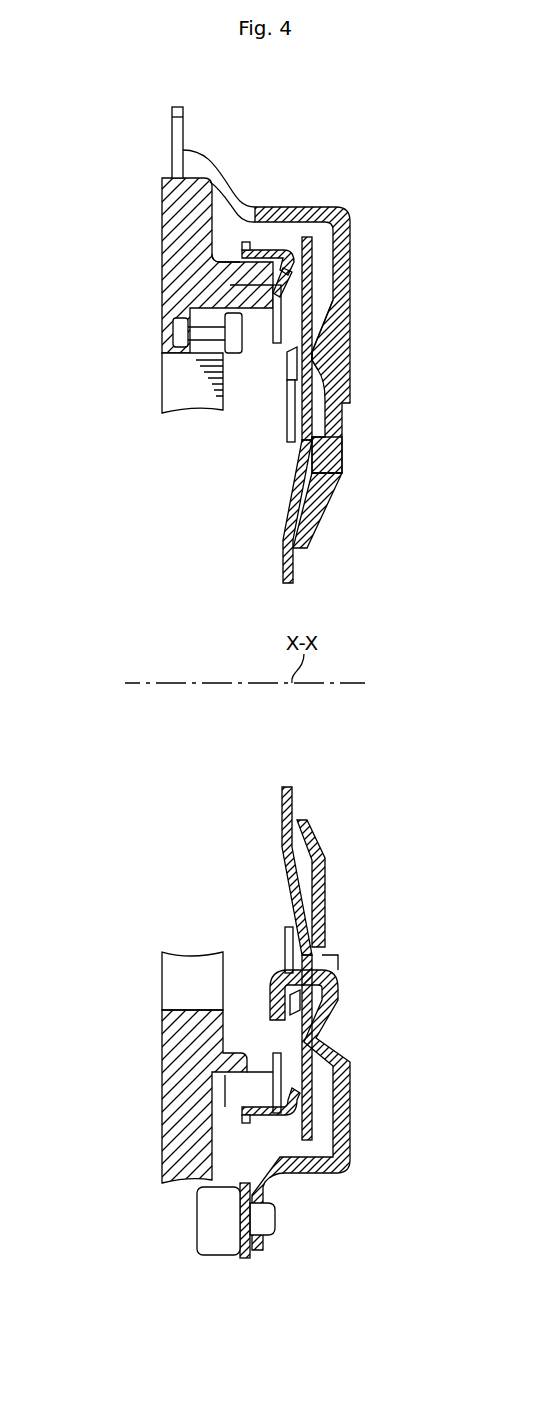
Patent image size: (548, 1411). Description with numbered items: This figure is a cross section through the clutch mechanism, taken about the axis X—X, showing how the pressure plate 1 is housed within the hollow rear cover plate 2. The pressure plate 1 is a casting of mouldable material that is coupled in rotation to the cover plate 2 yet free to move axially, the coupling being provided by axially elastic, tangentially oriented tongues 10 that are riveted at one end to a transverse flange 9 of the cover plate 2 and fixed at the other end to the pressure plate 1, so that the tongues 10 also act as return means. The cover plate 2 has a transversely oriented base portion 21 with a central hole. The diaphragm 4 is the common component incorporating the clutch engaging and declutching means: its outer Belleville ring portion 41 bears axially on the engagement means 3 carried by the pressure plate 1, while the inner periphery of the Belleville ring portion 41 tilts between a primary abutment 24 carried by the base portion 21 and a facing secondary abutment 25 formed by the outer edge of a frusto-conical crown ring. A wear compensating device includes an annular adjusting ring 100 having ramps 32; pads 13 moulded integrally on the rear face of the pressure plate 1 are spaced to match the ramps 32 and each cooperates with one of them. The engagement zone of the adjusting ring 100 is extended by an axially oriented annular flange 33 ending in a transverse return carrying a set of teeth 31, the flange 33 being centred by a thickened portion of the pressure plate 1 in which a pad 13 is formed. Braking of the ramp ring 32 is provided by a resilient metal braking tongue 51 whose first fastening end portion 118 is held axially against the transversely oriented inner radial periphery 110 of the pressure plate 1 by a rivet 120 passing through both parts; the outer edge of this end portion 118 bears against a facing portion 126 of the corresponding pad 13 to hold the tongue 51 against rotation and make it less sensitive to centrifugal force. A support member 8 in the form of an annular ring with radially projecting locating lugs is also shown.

The pressure plate 1 is at (150, 215).
The hollow rear cover plate 2 is at (350, 240).
The engagement means 3 is at (298, 1087).
The diaphragm 4 is at (353, 338).
The support member 8 is at (325, 507).
The transverse flange 9 is at (268, 1240).
The tongues 10 is at (244, 1258).
The pads 13 is at (268, 215).
The base portion 21 is at (330, 458).
The primary abutment 24 is at (325, 352).
The secondary abutment 25 is at (300, 372).
The set of teeth 31 is at (245, 245).
The ramps 32 is at (268, 300).
The axially oriented annular flange 33 is at (228, 268).
The Belleville ring portion 41 is at (312, 262).
The braking tongue 51 is at (236, 372).
The annular adjusting ring 100 is at (277, 240).
The inner radial periphery 110 is at (205, 358).
The first fastening end portion 118 is at (232, 340).
The rivet 120 is at (185, 330).
The facing portion 126 is at (326, 322).